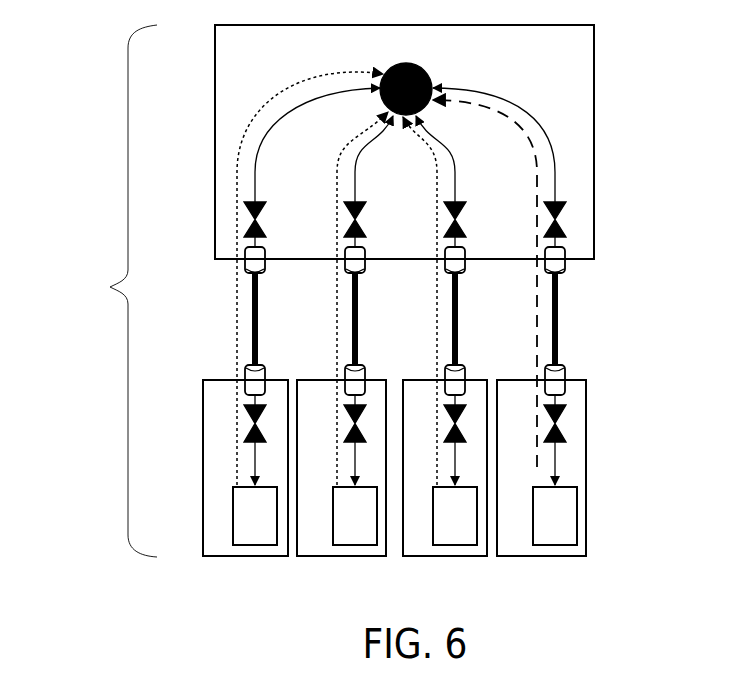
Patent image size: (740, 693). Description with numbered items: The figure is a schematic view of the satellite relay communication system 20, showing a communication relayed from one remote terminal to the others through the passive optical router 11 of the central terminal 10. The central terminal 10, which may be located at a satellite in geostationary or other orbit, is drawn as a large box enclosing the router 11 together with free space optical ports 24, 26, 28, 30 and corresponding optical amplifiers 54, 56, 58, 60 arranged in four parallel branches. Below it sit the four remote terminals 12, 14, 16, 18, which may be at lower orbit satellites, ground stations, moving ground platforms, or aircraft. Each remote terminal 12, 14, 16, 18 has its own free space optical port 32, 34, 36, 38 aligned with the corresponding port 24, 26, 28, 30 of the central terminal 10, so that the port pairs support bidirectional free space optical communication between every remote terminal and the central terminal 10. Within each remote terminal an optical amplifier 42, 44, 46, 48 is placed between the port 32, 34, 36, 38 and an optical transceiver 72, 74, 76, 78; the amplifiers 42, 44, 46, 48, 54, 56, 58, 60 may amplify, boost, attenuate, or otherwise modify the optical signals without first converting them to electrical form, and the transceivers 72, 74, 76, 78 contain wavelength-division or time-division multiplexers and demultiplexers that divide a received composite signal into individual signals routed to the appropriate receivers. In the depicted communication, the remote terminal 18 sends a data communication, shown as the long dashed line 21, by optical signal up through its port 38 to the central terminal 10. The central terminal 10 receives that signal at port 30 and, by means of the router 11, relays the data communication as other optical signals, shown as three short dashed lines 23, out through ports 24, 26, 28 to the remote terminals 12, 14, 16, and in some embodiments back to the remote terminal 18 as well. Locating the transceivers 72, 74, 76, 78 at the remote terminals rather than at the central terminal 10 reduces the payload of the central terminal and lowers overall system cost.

The central terminal 10 is at (596, 58).
The passive optical router 11 is at (430, 68).
The remote terminal 12 is at (244, 558).
The remote terminal 14 is at (305, 558).
The remote terminal 16 is at (405, 558).
The remote terminal 18 is at (545, 558).
The satellite relay communication system 20 is at (108, 287).
The long dashed line 21 is at (497, 119).
The short dashed lines 23 is at (283, 98).
The free space optical port 24 is at (263, 274).
The free space optical port 26 is at (363, 274).
The free space optical port 28 is at (463, 274).
The free space optical port 30 is at (563, 274).
The free space optical port 32 is at (263, 364).
The free space optical port 34 is at (363, 364).
The free space optical port 36 is at (463, 364).
The free space optical port 38 is at (563, 364).
The optical amplifier 42 is at (246, 433).
The optical amplifier 44 is at (345, 432).
The optical amplifier 46 is at (446, 433).
The optical amplifier 48 is at (564, 437).
The optical amplifier 54 is at (263, 221).
The optical amplifier 56 is at (363, 221).
The optical amplifier 58 is at (463, 221).
The optical amplifier 60 is at (566, 213).
The optical transceiver 72 is at (233, 510).
The optical transceiver 74 is at (367, 547).
The optical transceiver 76 is at (468, 547).
The optical transceiver 78 is at (577, 513).